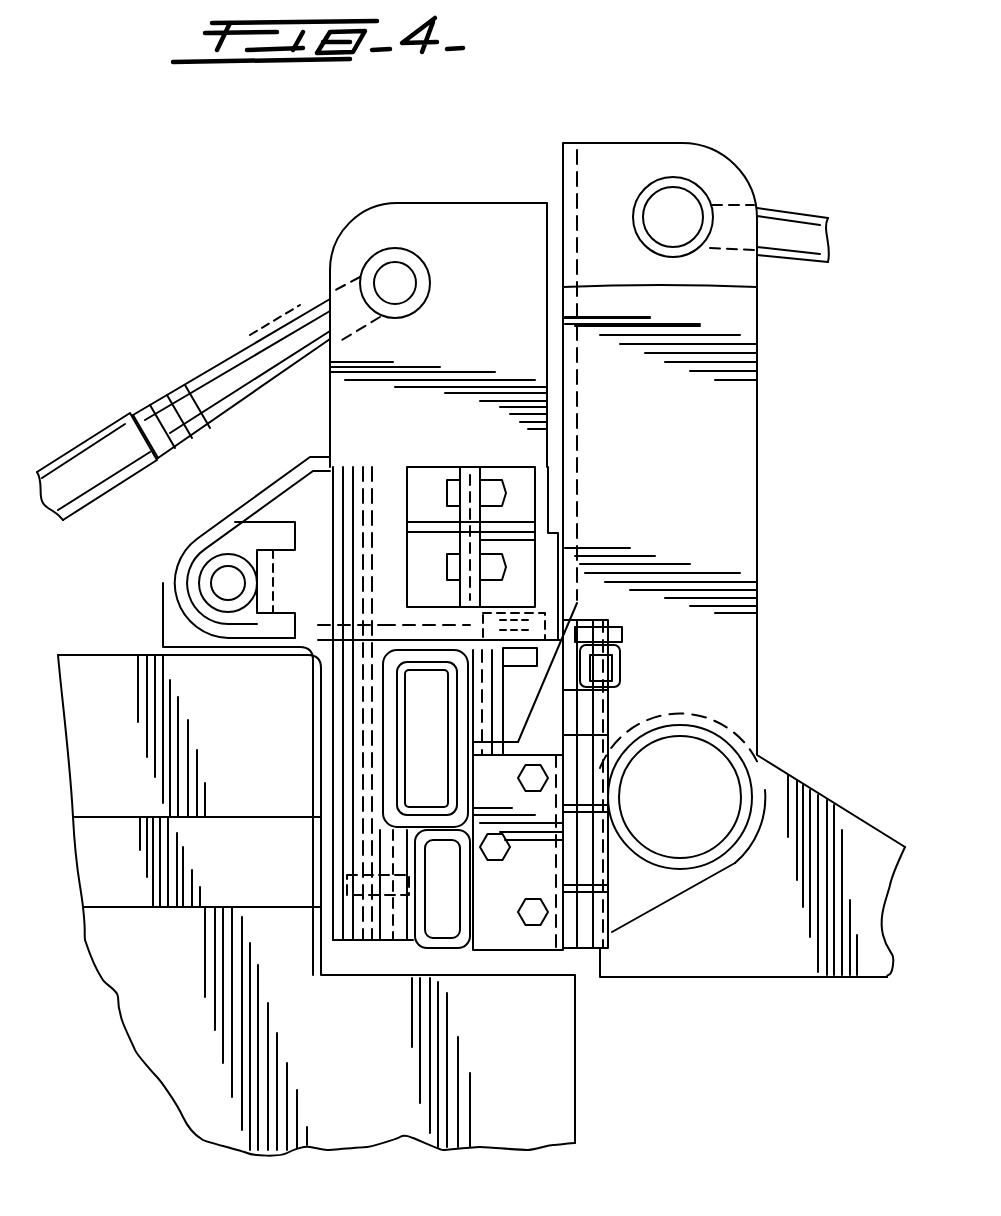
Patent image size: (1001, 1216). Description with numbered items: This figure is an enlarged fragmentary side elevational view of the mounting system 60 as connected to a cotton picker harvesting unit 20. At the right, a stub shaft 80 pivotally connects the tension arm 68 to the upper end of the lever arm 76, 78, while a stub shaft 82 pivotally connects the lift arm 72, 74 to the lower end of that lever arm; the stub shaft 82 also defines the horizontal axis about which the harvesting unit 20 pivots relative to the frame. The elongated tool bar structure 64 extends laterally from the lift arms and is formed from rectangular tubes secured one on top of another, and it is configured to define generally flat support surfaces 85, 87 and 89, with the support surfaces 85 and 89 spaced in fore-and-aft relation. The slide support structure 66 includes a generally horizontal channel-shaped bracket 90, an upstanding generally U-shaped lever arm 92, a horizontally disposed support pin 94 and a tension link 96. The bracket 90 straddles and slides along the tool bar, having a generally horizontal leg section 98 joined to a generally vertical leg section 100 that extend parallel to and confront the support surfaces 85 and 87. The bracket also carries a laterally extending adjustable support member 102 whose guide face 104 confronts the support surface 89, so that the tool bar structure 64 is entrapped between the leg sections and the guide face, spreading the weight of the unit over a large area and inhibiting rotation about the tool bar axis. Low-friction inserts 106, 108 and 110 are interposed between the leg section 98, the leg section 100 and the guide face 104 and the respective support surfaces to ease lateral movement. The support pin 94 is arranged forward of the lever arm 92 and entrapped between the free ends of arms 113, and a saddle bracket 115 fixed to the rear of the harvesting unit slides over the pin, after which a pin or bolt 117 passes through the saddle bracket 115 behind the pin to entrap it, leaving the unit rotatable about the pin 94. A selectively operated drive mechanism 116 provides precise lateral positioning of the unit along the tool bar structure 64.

The cotton picker harvesting unit 20 is at (158, 970).
The latch assembly 60 is at (540, 132).
The tool bar structure 64 is at (452, 948).
The slide support structure 66 is at (419, 204).
The tension arm 68 is at (780, 221).
The lift arm 72 is at (713, 960).
The lift arm 74 is at (882, 840).
The lever arm 76 is at (722, 302).
The lever arm 78 is at (728, 272).
The stub shaft 80 is at (697, 192).
The stub shaft 82 is at (738, 777).
The support surface 85 is at (385, 793).
The support surface 87 is at (430, 642).
The support surface 89 is at (472, 727).
The channel-shaped bracket 90 is at (365, 713).
The lever arm 92 is at (505, 338).
The support pin 94 is at (205, 587).
The tension link 96 is at (223, 368).
The horizontal leg section 98 is at (413, 615).
The vertical leg section 100 is at (363, 675).
The adjustable support member 102 is at (535, 693).
The guide face 104 is at (473, 740).
The insert 106 is at (357, 884).
The insert 108 is at (385, 623).
The insert 110 is at (497, 707).
The arm 113 is at (263, 493).
The saddle bracket 115 is at (163, 632).
The drive mechanism 116 is at (628, 667).
The pin or bolt 117 is at (258, 592).